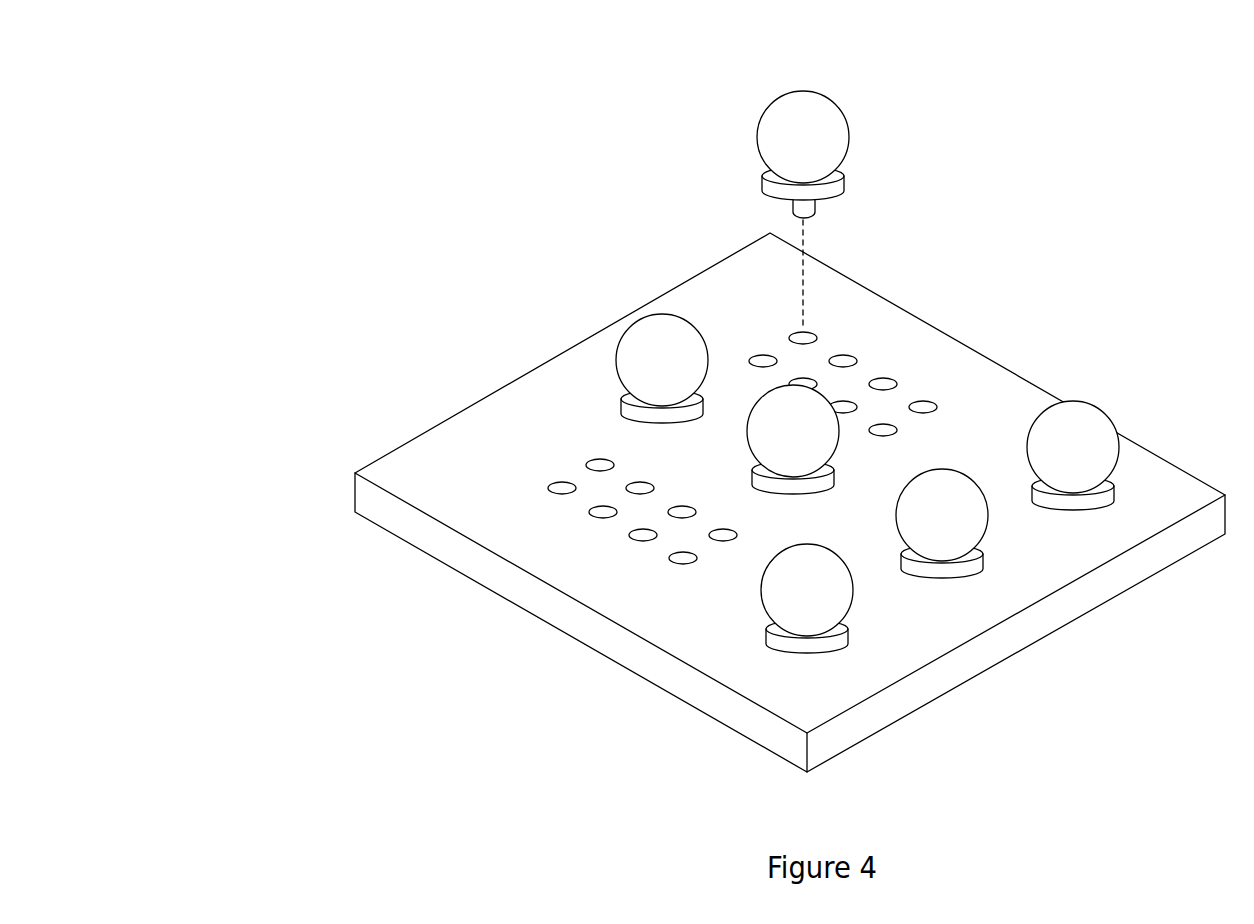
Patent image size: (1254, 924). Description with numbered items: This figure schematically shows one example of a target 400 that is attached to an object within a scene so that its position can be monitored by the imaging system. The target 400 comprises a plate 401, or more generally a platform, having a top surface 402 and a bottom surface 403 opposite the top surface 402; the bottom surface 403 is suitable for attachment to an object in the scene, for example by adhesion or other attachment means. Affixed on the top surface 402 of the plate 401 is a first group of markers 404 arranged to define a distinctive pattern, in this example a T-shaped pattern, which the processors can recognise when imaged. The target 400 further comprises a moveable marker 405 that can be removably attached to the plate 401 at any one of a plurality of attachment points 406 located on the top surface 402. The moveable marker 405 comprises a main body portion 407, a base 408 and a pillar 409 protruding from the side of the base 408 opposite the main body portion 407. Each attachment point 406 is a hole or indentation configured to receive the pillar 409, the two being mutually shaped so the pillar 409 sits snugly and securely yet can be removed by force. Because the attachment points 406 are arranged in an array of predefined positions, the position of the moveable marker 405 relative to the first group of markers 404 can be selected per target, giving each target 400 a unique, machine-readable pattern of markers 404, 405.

The target 400 is at (659, 398).
The plate 401 is at (765, 504).
The top surface 402 is at (412, 474).
The bottom surface 403 is at (555, 633).
The first group of markers 404 is at (640, 347).
The moveable marker 405 is at (780, 176).
The attachment points 406 is at (810, 331).
The main body portion 407 is at (833, 107).
The base 408 is at (843, 168).
The pillar 409 is at (790, 210).